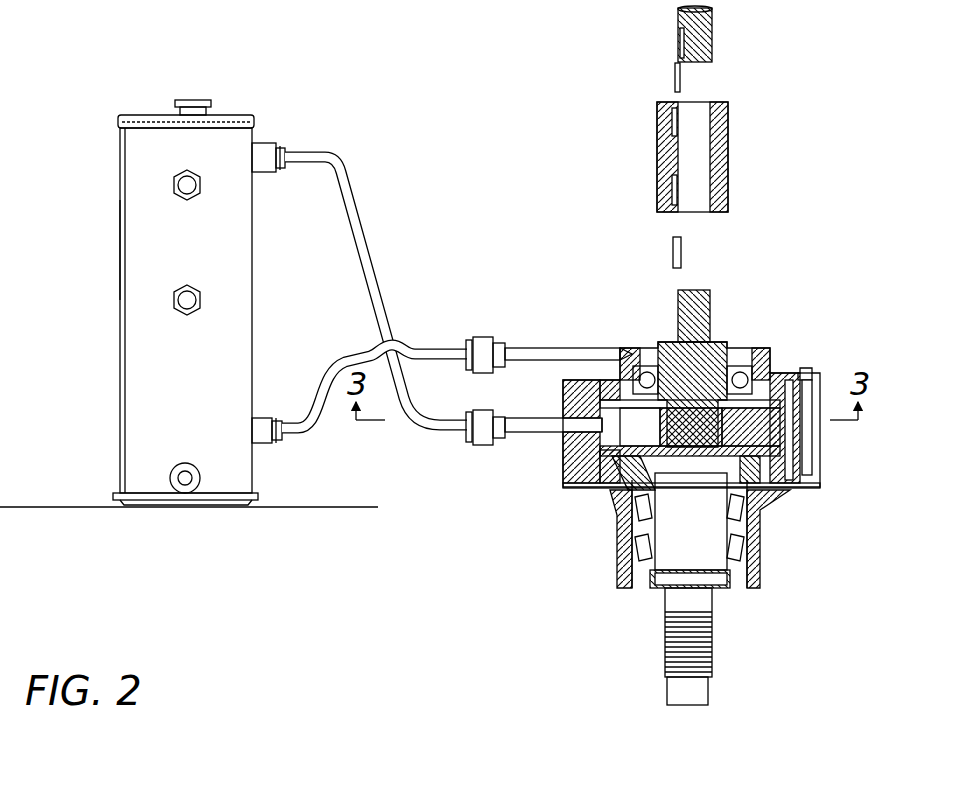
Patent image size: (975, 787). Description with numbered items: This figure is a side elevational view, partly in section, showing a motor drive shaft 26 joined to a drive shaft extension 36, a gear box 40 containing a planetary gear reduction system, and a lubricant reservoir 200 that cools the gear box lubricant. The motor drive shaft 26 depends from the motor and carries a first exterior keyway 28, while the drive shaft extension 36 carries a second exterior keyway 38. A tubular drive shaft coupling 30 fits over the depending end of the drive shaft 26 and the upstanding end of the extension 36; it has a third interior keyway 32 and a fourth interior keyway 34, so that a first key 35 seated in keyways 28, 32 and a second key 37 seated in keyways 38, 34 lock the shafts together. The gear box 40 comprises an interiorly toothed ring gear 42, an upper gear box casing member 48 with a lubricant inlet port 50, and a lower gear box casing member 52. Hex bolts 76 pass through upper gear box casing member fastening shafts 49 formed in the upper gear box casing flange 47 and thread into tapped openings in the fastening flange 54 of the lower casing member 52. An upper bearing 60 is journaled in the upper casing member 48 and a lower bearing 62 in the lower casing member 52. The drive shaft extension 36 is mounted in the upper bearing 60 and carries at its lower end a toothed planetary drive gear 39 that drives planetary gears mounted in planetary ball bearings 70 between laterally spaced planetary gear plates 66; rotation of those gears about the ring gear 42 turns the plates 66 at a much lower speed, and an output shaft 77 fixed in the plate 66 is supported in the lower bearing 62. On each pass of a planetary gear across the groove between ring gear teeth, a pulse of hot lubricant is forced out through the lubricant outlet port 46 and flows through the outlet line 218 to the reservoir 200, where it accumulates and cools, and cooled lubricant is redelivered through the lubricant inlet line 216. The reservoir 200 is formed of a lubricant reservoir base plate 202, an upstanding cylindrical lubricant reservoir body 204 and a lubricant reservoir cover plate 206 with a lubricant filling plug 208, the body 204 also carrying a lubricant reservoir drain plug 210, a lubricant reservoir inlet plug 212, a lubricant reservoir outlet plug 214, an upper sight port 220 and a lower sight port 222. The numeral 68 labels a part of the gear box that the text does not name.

The motor drive shaft 26 is at (714, 36).
The first exterior keyway 28 is at (680, 44).
The first key 35 is at (675, 76).
The drive shaft coupling 30 is at (728, 135).
The third interior keyway 32 is at (672, 110).
The fourth interior keyway 34 is at (672, 192).
The second key 37 is at (673, 248).
The drive shaft extension 36 is at (712, 300).
The second exterior keyway 38 is at (678, 318).
The lubricant inlet port 50 is at (638, 366).
The upper gear box casing member 48 is at (750, 366).
The upper bearing 60 is at (765, 348).
The upper gear box casing flange 47 is at (789, 380).
The hex bolts 76 is at (806, 373).
The upper gear box casing member fastening shafts 49 is at (815, 385).
The lubricant outlet port 46 is at (575, 400).
The interiorly toothed ring gear 42 is at (563, 448).
The planetary ball bearings 70 is at (770, 445).
The fastening flange 54 is at (790, 462).
The planetary gear plates 66 is at (748, 470).
The lower gear box casing member 52 is at (760, 538).
The lower bearing 62 is at (752, 558).
The output shaft 77 is at (705, 555).
The outlet line 68 is at (622, 478).
The toothed planetary drive gear 39 is at (625, 505).
The gear box 40 is at (530, 543).
The lubricant reservoir 200 is at (186, 310).
The lubricant reservoir base plate 202 is at (172, 500).
The upstanding cylindrical lubricant reservoir body 204 is at (130, 246).
The lubricant reservoir cover plate 206 is at (148, 115).
The lubricant filling plug 208 is at (193, 100).
The lubricant reservoir drain plug 210 is at (170, 478).
The lubricant reservoir inlet plug 212 is at (267, 443).
The lubricant reservoir outlet plug 214 is at (272, 143).
The lubricant inlet line 216 is at (425, 348).
The outlet line 218 is at (368, 243).
The upper sight port 220 is at (174, 185).
The lower sight port 222 is at (174, 300).